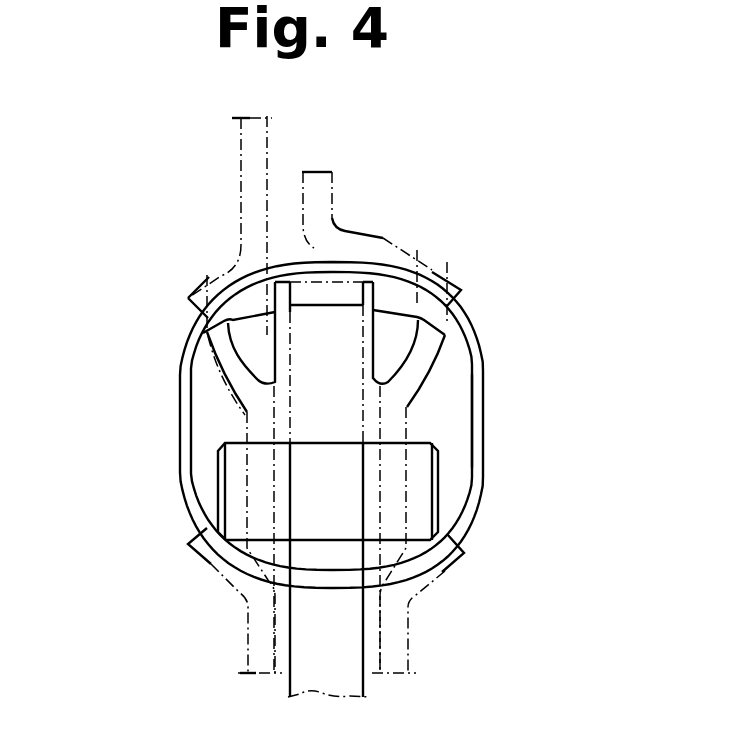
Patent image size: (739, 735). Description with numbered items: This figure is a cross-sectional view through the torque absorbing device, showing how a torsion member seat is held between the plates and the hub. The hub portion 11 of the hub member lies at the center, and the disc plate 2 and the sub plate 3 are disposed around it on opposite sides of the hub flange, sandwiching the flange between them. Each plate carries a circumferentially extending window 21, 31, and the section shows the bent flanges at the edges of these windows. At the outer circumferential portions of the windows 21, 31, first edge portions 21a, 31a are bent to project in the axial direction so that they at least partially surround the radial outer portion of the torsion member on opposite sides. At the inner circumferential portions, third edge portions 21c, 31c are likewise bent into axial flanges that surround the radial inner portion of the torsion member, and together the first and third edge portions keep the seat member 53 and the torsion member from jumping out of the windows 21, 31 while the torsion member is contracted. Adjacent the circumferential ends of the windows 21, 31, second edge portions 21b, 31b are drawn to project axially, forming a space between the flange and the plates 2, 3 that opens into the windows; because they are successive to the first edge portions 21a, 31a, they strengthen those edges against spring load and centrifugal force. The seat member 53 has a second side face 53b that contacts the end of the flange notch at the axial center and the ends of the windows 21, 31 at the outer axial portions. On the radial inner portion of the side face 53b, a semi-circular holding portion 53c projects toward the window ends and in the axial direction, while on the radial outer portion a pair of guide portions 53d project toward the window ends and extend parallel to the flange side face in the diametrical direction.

The disc plate 2 is at (272, 161).
The sub plate 3 is at (336, 186).
The hub portion 11 is at (338, 620).
The window 21 is at (226, 405).
The first edge portion 21a is at (205, 270).
The second edge portion 21b is at (208, 335).
The third edge portion 21c is at (203, 562).
The window 31 is at (490, 506).
The first edge portion 31a is at (436, 265).
The second edge portion 31b is at (440, 345).
The third edge portion 31c is at (437, 567).
The seat member 53 is at (178, 488).
The second side face 53b is at (452, 410).
The holding portion 53c is at (430, 470).
The guide portion 53d is at (250, 325).